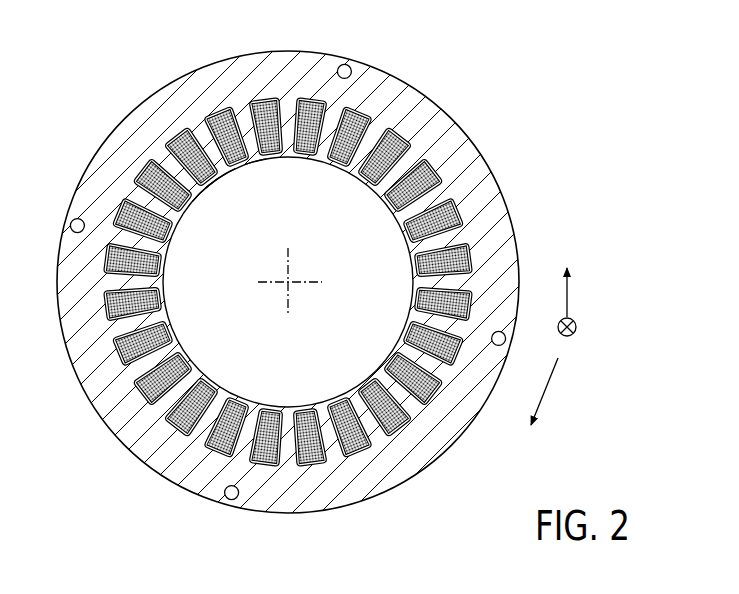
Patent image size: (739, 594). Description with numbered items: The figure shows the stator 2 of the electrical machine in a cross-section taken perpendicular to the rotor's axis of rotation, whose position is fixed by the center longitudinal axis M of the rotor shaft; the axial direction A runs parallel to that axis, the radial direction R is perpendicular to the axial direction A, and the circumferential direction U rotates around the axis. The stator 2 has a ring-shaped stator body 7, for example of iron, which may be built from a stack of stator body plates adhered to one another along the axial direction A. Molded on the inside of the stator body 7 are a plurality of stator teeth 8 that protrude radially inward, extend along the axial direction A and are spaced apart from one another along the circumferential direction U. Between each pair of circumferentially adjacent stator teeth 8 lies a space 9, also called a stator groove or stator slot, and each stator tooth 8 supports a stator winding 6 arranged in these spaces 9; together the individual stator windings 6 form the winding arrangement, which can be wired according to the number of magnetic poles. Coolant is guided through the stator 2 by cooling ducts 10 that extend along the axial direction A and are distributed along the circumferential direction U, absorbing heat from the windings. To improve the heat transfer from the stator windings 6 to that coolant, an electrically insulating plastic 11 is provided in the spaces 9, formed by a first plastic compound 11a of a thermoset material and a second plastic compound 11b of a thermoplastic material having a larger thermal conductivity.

The stator 2 is at (307, 297).
The stator winding 6 is at (167, 143).
The stator body 7 is at (430, 100).
The stator tooth 8 is at (200, 190).
The space 9 is at (297, 214).
The cooling duct 10 is at (222, 113).
The electrically insulating plastic 11 is at (208, 185).
The first plastic compound 11a is at (210, 184).
The second plastic compound 11b is at (221, 190).
The center longitudinal axis M is at (317, 304).
The radial direction R is at (567, 292).
The axial direction A is at (577, 327).
The circumferential direction U is at (550, 390).